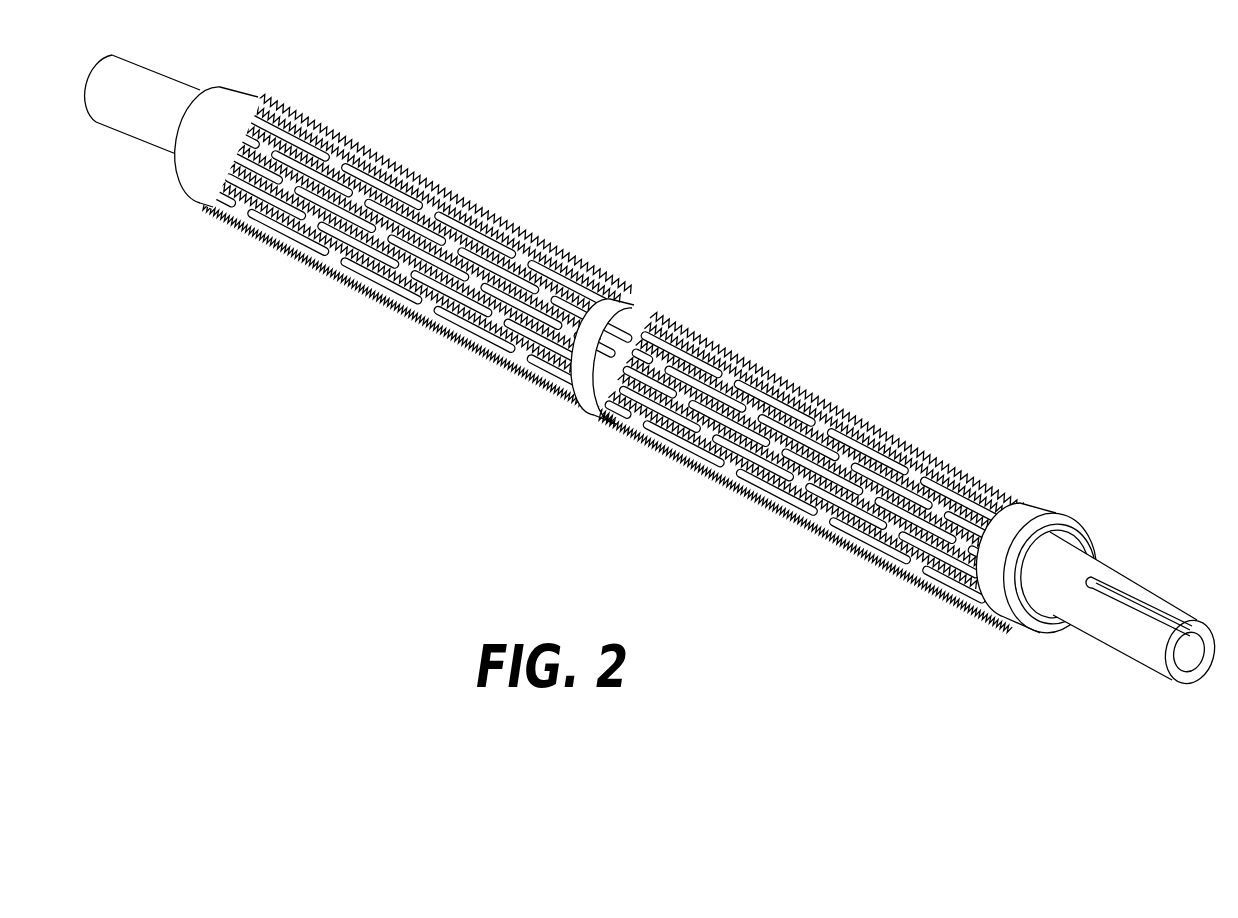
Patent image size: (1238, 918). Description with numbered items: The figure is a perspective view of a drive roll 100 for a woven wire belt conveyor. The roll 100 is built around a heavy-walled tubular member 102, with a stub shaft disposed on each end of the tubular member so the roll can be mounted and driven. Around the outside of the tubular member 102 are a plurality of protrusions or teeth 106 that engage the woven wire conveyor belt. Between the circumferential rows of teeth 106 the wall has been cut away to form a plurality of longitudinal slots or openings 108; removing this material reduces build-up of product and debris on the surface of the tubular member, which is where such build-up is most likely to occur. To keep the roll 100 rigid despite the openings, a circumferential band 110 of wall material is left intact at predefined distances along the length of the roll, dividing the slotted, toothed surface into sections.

The drive roll 100 is at (653, 363).
The tubular member 102 is at (814, 505).
The teeth 106 is at (572, 260).
The slots 108 is at (885, 565).
The circumferential band 110 is at (643, 302).